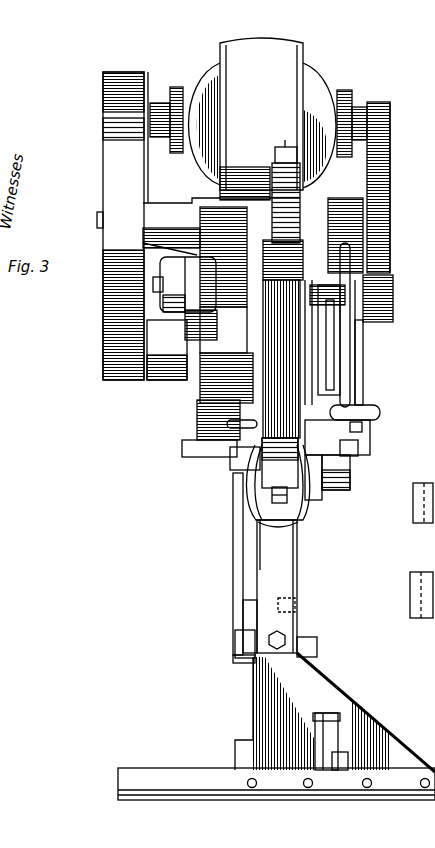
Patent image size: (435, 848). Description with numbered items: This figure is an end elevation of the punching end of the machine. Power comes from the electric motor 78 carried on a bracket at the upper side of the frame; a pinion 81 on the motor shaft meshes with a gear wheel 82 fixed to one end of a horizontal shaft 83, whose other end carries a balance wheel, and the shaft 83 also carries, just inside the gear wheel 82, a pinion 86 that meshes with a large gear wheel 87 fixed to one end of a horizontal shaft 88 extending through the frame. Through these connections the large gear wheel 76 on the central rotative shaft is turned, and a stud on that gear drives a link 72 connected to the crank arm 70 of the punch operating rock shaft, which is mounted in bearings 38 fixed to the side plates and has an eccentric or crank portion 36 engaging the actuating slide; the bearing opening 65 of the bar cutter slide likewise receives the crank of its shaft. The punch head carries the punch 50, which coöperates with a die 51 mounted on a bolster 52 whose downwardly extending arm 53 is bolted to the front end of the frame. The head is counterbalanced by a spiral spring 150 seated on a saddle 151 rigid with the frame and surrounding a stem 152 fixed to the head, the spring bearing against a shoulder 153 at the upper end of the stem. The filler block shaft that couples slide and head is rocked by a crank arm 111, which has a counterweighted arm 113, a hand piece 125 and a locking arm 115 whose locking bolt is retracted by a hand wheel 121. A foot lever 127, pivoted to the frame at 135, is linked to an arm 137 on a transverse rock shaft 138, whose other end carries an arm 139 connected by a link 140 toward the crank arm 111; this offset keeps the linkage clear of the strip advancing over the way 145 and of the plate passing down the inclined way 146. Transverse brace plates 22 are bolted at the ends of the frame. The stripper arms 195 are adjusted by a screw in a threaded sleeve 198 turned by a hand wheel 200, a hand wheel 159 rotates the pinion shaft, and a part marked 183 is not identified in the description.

The bearing opening 65 is at (103, 160).
The horizontal shaft 83 is at (97, 219).
The electric motor 78 is at (263, 119).
The spring 150 is at (218, 197).
The stem 152 is at (290, 140).
The shoulder 153 is at (275, 160).
The saddle 151 is at (285, 276).
The pinion 81 is at (378, 106).
The gear wheel 82 is at (390, 170).
The pinion 86 is at (342, 198).
The large gear wheel 87 is at (390, 268).
The hand wheel 159 is at (347, 307).
The horizontal shaft 88 is at (340, 368).
The eccentric or crank portion 36 is at (350, 352).
The hand piece 125 is at (380, 412).
The locking arm 115 is at (337, 437).
The crank arm 111 is at (362, 428).
The hand wheel 121 is at (356, 450).
The counterweighted arm 113 is at (350, 480).
The crank arm 70 is at (213, 297).
The link 72 is at (170, 268).
The bearings 38 is at (195, 386).
The large gear wheel 76 is at (197, 418).
The hand wheel 200 is at (237, 428).
The screw-threaded sleeve 198 is at (240, 458).
The arms 195 is at (255, 503).
The punch 50 is at (298, 522).
The die support or bolster 52 is at (293, 545).
The die 51 is at (258, 518).
The link 140 is at (233, 560).
The downwardly extending arm 53 is at (258, 595).
The arm 139 is at (236, 642).
The guide or way 145 is at (300, 598).
The arm 137 is at (290, 636).
The rock shaft 138 is at (317, 647).
The brace plates or webs 22 is at (330, 683).
The downwardly inclined way 146 is at (253, 748).
The foot lever 127 is at (335, 725).
The pivot 135 is at (348, 760).
The block 183 is at (425, 572).